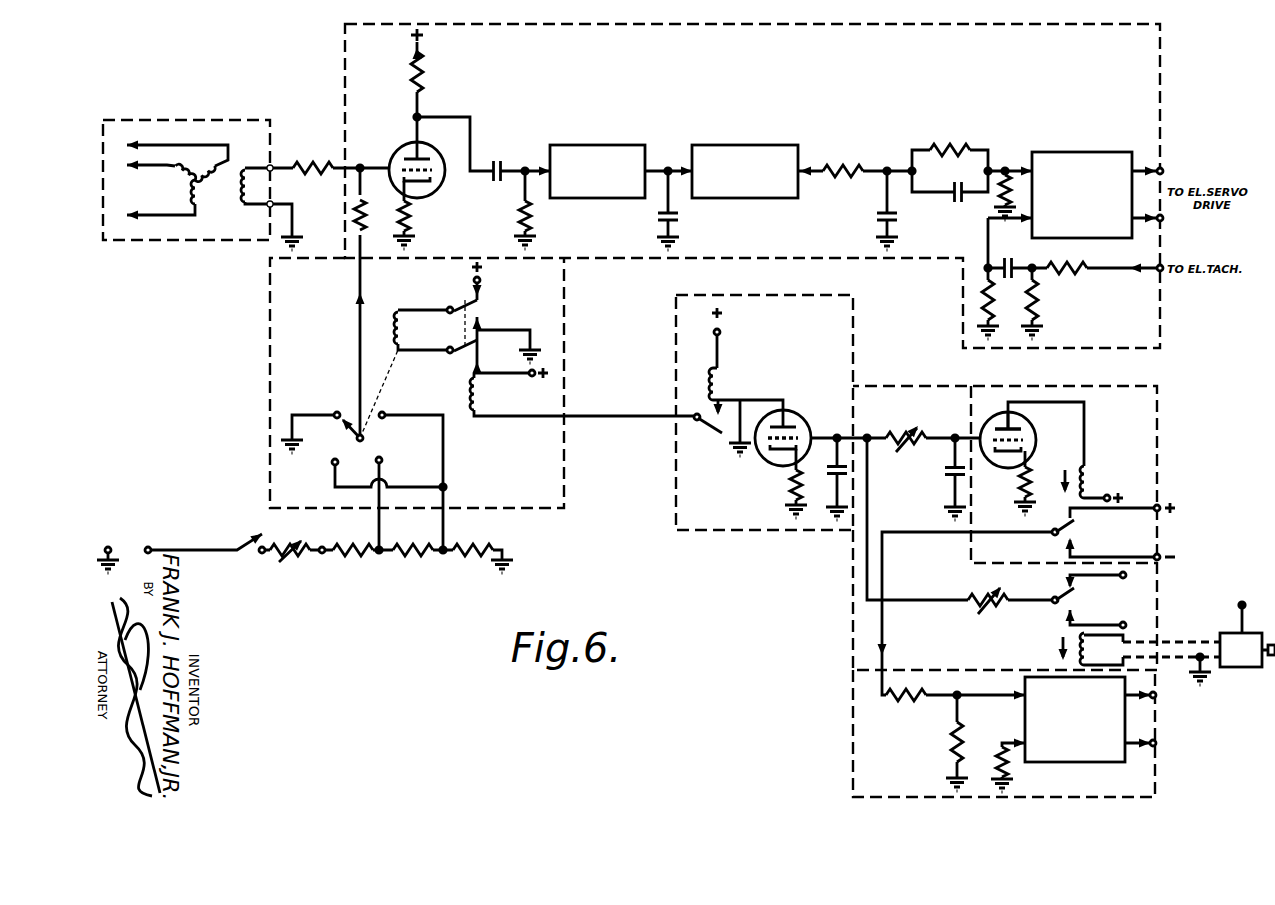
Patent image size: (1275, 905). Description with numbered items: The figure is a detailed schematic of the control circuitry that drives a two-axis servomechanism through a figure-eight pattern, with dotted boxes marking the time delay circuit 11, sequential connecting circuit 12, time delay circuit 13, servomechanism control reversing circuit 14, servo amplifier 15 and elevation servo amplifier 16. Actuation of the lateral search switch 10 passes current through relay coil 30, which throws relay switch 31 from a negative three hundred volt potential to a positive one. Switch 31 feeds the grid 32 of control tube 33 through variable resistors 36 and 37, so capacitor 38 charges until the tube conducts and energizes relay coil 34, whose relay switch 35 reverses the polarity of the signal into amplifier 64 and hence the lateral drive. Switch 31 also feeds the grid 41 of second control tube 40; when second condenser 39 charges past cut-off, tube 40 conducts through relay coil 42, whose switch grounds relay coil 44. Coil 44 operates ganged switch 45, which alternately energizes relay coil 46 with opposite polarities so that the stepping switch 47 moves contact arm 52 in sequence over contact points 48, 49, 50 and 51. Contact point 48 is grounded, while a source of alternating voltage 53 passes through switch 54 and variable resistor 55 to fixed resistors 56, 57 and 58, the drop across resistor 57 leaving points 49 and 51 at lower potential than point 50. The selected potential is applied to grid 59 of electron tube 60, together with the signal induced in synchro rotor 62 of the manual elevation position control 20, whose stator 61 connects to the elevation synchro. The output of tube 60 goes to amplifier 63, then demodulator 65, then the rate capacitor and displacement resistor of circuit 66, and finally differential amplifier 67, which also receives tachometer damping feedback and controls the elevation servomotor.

The switch 10 is at (1241, 668).
The time delay circuit 11 is at (730, 530).
The sequential connecting circuit 12 is at (566, 488).
The time delay circuit 13 is at (914, 386).
The servomechanism control reversing circuit 14 is at (1160, 437).
The servo amplifier 15 is at (1157, 762).
The elevation servo amplifier 16 is at (1162, 70).
The manual elevation position control 20 is at (203, 164).
The relay coil 30 is at (1087, 652).
The relay switch 31 is at (1074, 598).
The grid 32 is at (1040, 445).
The control tube 33 is at (1029, 425).
The relay coil 34 is at (702, 432).
The relay switch 35 is at (1077, 530).
The variable resistor 36 is at (988, 595).
The variable resistor 37 is at (906, 430).
The capacitor 38 is at (950, 477).
The second condenser 39 is at (803, 478).
The second control tube 40 is at (803, 414).
The grid 41 is at (809, 436).
The relay coil 42 is at (723, 378).
The relay coil 44 is at (480, 400).
The ganged switch 45 is at (488, 332).
The relay coil 46 is at (393, 322).
The stepping switch 47 is at (344, 409).
The contact point 48 is at (335, 416).
The contact point 49 is at (333, 462).
The contact point 50 is at (382, 460).
The contact point 51 is at (384, 414).
The contact arm 52 is at (355, 439).
The source of alternating voltage 53 is at (135, 549).
The switch 54 is at (249, 539).
The variable resistor 55 is at (291, 560).
The fixed resistor 56 is at (353, 560).
The fixed resistor 57 is at (413, 560).
The fixed resistor 58 is at (471, 562).
The grid 59 is at (381, 168).
The electron tube 60 is at (402, 148).
The stator 61 is at (230, 154).
The synchro rotor 62 is at (244, 204).
The amplifier 63 is at (603, 145).
The amplifier 64 is at (1072, 763).
The demodulator 65 is at (750, 145).
The circuit 66 is at (990, 150).
The differential amplifier 67 is at (1085, 152).